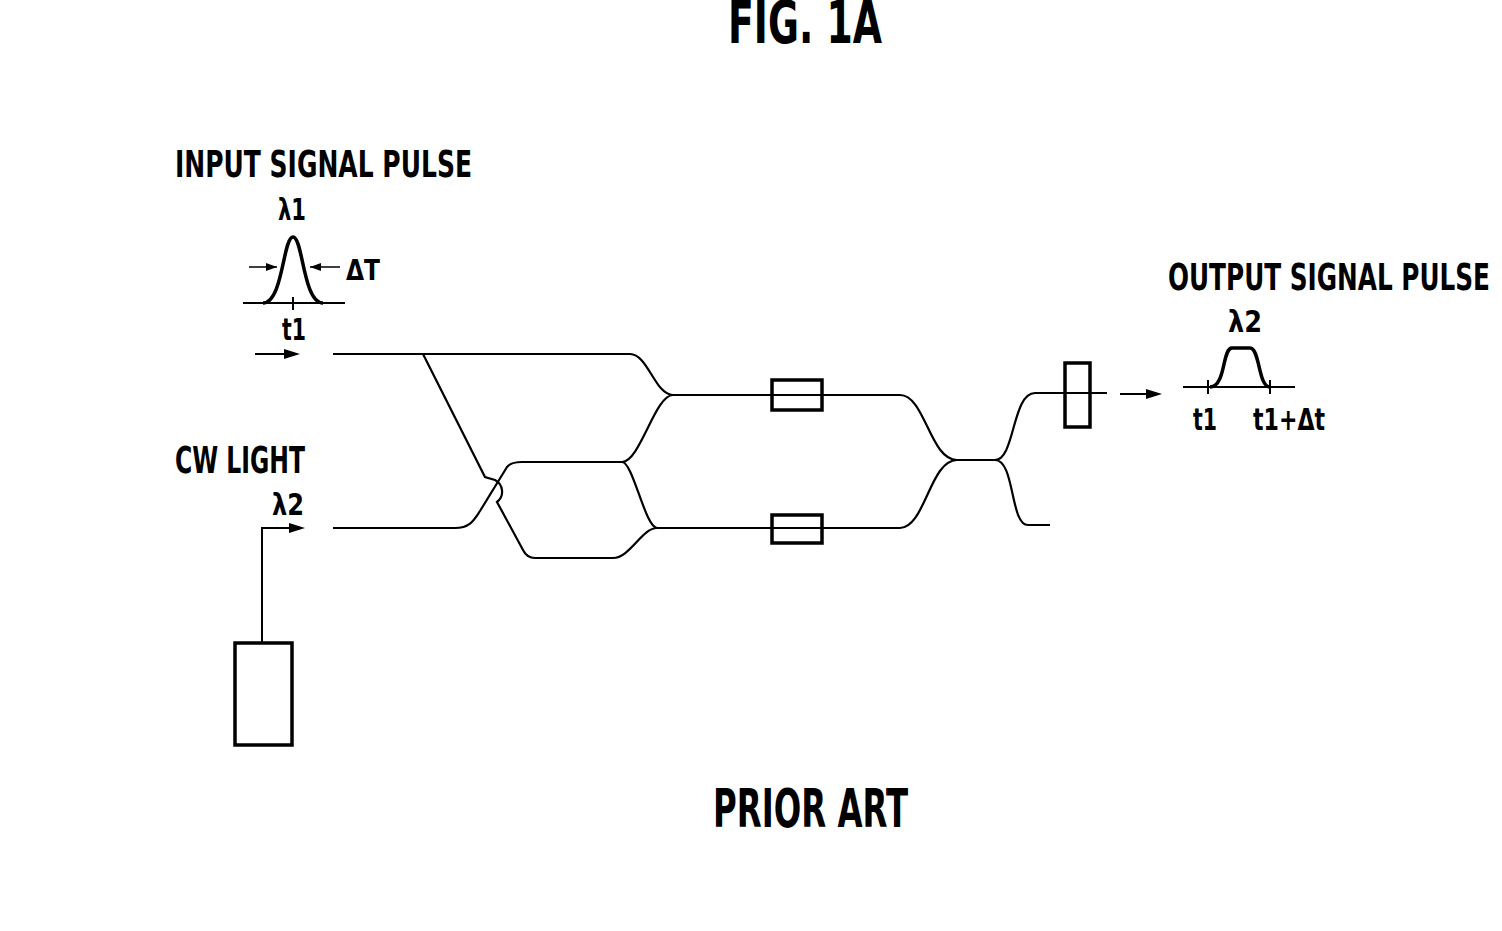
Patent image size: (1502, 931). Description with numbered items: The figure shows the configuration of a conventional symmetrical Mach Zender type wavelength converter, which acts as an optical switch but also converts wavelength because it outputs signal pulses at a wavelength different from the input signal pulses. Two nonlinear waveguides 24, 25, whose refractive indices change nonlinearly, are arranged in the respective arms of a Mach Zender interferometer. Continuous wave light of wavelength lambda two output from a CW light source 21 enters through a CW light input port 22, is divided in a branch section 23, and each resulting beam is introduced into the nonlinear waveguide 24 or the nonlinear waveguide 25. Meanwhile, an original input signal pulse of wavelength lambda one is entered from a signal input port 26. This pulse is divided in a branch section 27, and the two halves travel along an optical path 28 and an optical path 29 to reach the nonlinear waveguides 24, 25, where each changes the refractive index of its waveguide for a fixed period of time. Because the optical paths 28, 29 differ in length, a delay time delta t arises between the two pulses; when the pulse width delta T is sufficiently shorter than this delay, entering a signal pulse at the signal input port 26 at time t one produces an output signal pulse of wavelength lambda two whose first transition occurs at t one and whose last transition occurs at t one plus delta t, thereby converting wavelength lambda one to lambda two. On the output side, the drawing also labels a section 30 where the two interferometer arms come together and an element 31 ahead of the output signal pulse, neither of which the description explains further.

The CW light source 21 is at (292, 708).
The CW light input port 22 is at (333, 528).
The branch section 23 is at (615, 455).
The nonlinear waveguide 24 is at (795, 380).
The nonlinear waveguide 25 is at (790, 545).
The signal input port 26 is at (334, 357).
The branch section 27 is at (423, 352).
The optical path 28 is at (555, 352).
The optical path 29 is at (577, 560).
The output optical coupler 30 is at (975, 470).
The optical filter 31 is at (1107, 387).